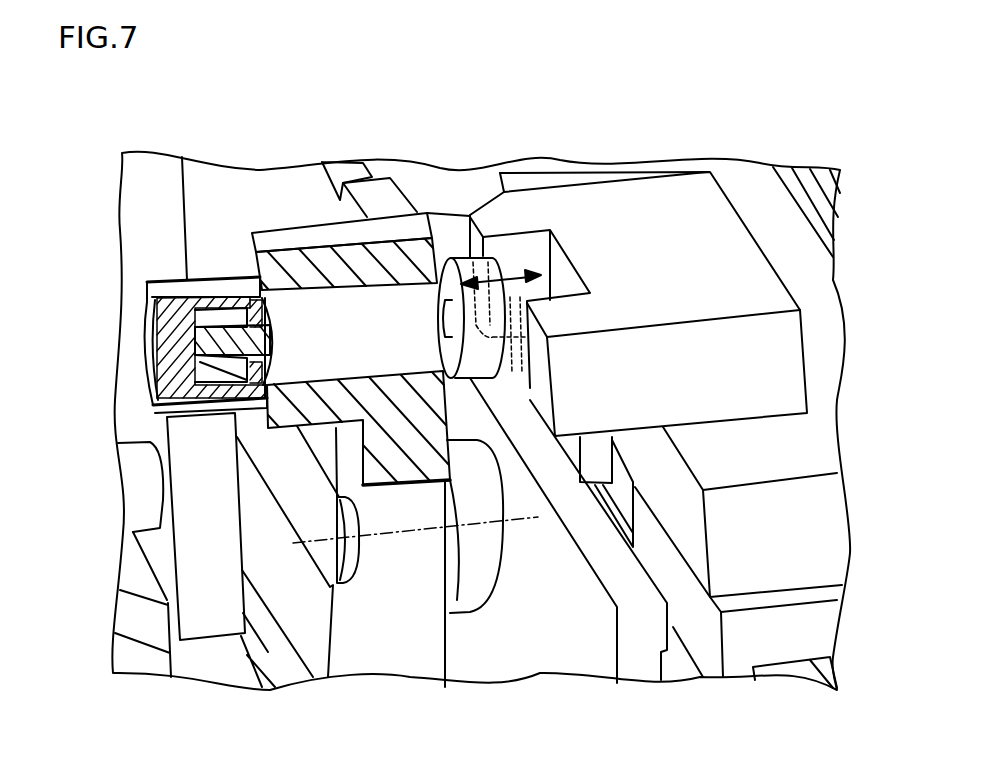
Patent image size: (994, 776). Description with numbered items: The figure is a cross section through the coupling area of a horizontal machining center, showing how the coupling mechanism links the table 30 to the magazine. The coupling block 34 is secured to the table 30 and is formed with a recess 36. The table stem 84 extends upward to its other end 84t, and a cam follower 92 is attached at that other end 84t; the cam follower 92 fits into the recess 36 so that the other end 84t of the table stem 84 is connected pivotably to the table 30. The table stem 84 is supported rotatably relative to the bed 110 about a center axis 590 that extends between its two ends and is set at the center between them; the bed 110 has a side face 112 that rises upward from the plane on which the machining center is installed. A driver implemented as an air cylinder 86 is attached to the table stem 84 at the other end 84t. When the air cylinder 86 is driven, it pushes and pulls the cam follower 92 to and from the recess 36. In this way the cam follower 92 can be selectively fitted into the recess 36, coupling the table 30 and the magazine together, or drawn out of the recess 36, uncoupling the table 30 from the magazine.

The table 30 is at (813, 282).
The coupling block 34 is at (687, 192).
The recess 36 is at (562, 268).
The table stem 84 is at (413, 648).
The other end 84t is at (313, 233).
The air cylinder 86 is at (227, 268).
The cam follower 92 is at (460, 258).
The bed 110 is at (640, 665).
The side face 112 is at (571, 652).
The center axis 590 is at (387, 537).